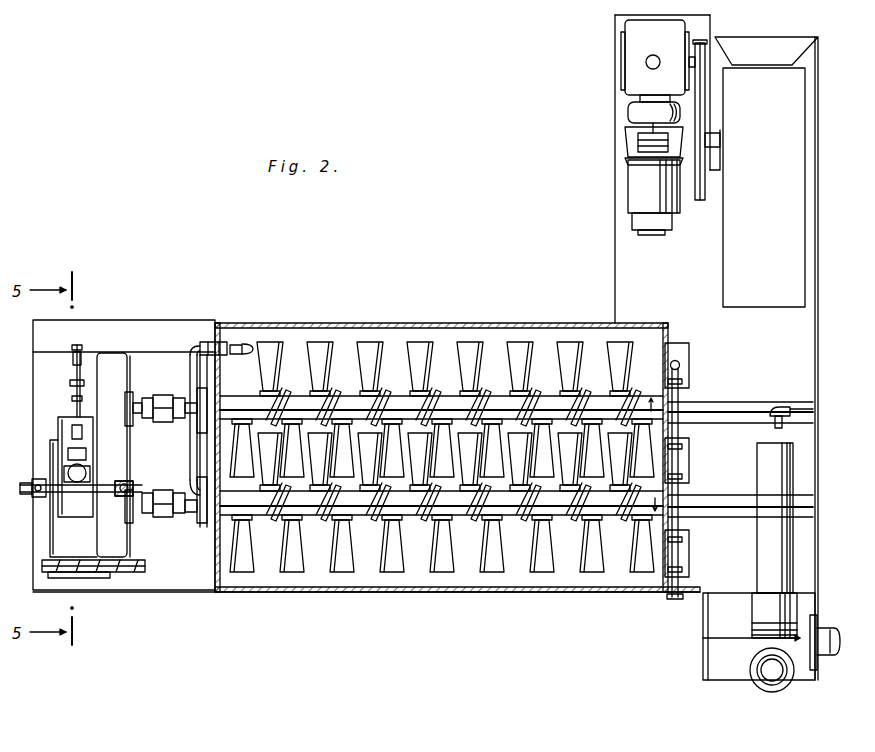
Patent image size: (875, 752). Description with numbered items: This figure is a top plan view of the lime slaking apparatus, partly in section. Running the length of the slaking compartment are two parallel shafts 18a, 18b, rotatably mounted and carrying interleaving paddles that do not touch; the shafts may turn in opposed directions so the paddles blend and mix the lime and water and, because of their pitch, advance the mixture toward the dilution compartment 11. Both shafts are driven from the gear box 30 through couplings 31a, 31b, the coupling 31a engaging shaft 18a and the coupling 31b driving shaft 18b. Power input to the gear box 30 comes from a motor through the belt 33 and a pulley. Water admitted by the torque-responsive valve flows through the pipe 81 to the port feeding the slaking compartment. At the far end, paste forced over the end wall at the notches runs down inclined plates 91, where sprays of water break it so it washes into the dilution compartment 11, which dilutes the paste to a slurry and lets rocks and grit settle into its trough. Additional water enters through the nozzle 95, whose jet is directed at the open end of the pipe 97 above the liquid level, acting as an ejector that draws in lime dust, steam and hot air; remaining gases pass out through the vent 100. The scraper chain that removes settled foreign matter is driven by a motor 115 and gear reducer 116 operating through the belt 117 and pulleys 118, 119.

The dilution compartment 11 is at (745, 470).
The shaft 18a is at (247, 520).
The shaft 18b is at (240, 405).
The gear box 30 is at (122, 526).
The coupling 31a is at (162, 511).
The coupling 31b is at (163, 422).
The belt 33 is at (125, 574).
The pipe 81 is at (140, 487).
The inclined plate 91 is at (689, 372).
The nozzle 95 is at (783, 428).
The pipe 97 is at (785, 548).
The vent 100 is at (757, 688).
The motor 115 is at (633, 198).
The gear reducer 116 is at (632, 72).
The belt 117 is at (706, 107).
The pulley 118 is at (707, 55).
The pulley 119 is at (703, 192).